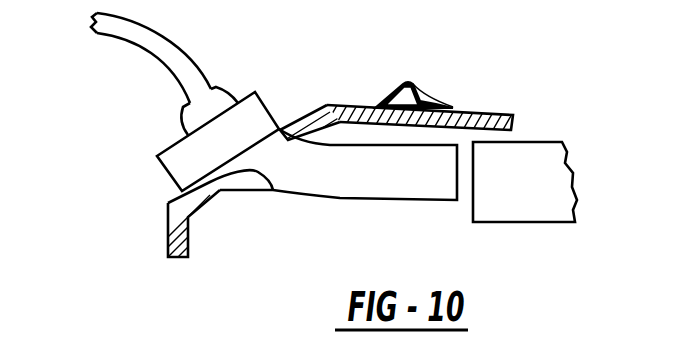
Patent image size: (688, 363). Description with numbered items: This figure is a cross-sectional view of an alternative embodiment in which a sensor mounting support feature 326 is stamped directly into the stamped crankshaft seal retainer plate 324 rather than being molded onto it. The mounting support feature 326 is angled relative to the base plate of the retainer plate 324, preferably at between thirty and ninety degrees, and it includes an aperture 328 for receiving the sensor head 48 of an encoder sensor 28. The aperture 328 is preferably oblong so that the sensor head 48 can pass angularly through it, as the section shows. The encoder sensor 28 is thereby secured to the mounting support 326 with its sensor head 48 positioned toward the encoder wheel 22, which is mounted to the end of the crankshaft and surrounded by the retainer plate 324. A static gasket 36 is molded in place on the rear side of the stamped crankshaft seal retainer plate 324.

The encoder wheel 22 is at (535, 205).
The encoder sensor 28 is at (158, 142).
The static gasket 36 is at (415, 84).
The sensor head 48 is at (382, 182).
The stamped crankshaft seal retainer plate 324 is at (493, 113).
The sensor mounting support feature 326 is at (303, 120).
The aperture 328 is at (273, 190).